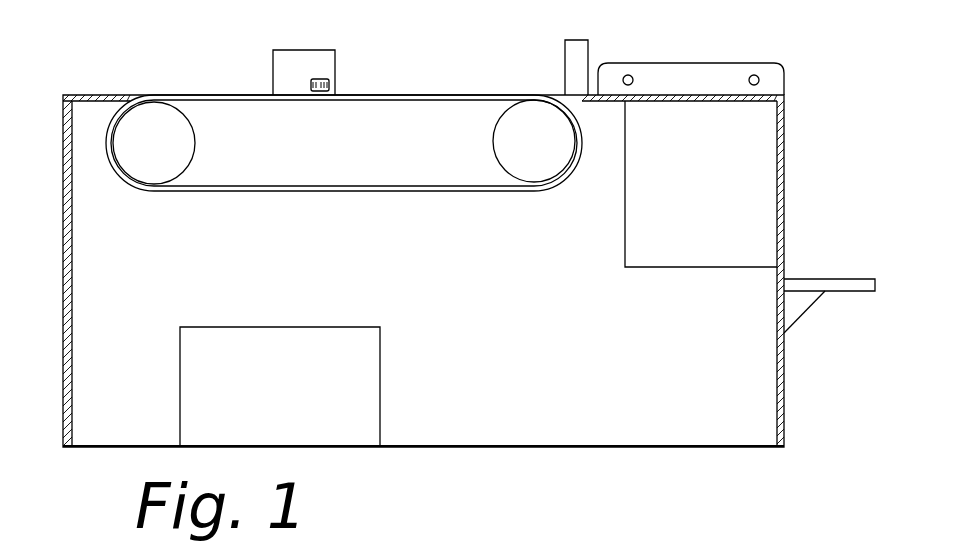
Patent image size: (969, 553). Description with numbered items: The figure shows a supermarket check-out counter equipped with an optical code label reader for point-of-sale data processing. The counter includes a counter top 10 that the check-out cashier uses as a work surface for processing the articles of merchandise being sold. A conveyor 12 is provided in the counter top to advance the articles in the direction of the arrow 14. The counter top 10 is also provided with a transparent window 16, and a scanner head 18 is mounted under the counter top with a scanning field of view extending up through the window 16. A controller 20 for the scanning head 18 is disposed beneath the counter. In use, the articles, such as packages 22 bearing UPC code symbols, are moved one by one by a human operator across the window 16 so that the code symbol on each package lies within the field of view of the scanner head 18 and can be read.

The counter top 10 is at (605, 95).
The conveyor 12 is at (218, 95).
The arrow 14 is at (354, 73).
The transparent window 16 is at (700, 93).
The scanner head 18 is at (711, 248).
The controller 20 is at (352, 345).
The packages 22 is at (298, 63).